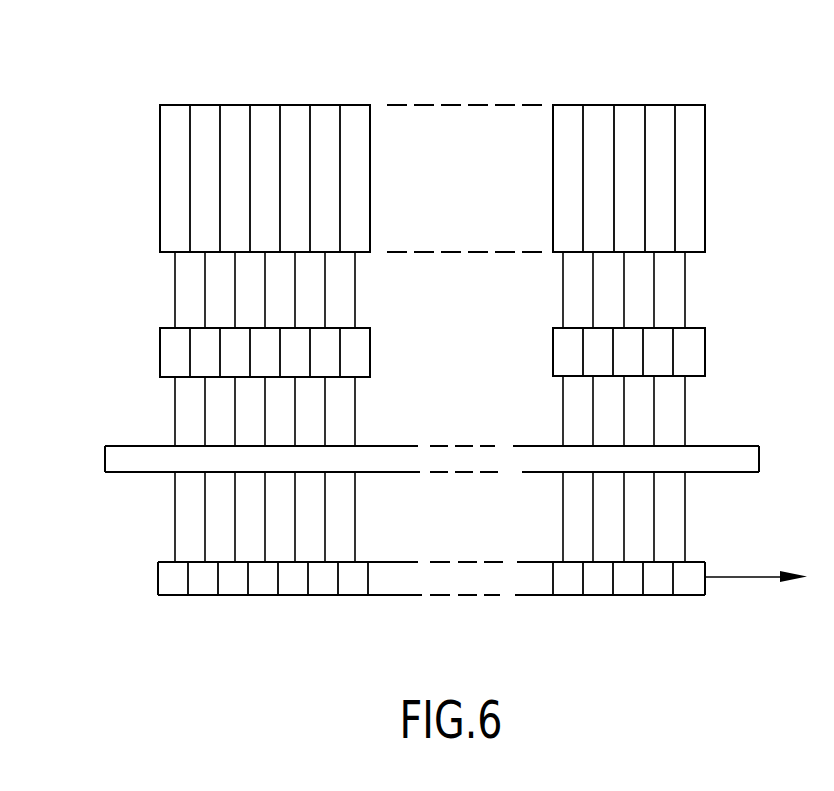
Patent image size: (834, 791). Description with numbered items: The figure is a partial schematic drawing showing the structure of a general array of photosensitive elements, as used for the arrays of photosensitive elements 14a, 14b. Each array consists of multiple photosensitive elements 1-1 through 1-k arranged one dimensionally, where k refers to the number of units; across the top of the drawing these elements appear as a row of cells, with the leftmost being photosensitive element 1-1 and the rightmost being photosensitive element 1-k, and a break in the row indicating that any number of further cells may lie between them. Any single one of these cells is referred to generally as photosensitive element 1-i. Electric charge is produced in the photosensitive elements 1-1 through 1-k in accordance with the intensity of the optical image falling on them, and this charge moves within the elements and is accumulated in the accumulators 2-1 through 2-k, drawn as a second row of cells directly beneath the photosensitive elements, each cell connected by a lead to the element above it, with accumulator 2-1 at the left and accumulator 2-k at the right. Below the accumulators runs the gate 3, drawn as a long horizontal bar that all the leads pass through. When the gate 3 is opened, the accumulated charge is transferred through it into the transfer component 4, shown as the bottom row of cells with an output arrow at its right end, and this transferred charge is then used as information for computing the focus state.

The photosensitive element 1-1 is at (232, 144).
The photosensitive element 1-i is at (570, 112).
The photosensitive element 1-k is at (693, 113).
The accumulator 2-1 is at (170, 360).
The accumulator 2-k is at (700, 347).
The gate 3 is at (105, 460).
The transfer component 4 is at (158, 583).
The array of photosensitive elements 14a is at (265, 144).
The array of photosensitive elements 14b is at (263, 105).